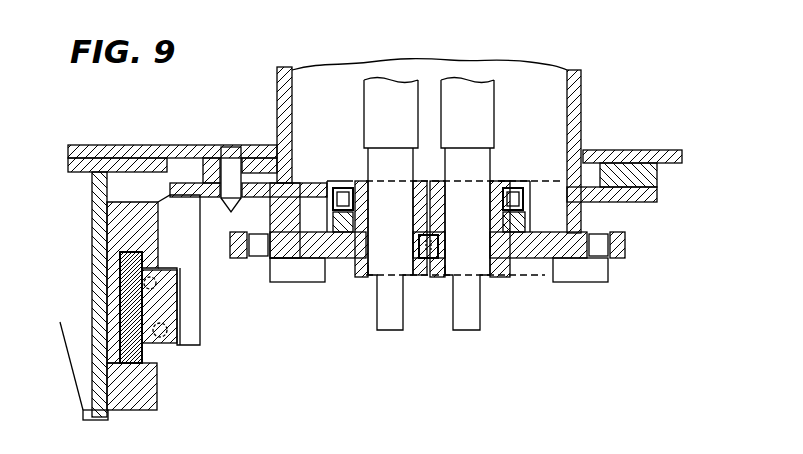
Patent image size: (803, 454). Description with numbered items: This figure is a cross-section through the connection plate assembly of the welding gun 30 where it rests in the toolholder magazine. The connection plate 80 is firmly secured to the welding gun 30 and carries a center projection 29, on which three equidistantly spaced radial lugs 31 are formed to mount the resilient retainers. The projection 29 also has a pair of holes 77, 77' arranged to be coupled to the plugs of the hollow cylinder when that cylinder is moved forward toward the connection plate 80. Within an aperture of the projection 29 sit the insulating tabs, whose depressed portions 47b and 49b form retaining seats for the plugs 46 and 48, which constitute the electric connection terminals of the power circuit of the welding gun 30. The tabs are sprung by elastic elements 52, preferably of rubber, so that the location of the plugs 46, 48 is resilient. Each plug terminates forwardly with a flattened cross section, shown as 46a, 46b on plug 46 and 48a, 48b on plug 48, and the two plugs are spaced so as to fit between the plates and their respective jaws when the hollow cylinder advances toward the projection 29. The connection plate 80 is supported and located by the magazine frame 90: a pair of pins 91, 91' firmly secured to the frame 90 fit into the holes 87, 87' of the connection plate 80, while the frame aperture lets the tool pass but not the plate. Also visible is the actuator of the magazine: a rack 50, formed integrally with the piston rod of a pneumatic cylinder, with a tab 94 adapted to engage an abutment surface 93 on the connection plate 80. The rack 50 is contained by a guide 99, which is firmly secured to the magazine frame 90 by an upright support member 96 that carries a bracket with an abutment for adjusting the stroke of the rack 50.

The center projection 29 is at (330, 240).
The welding gun 30 is at (573, 100).
The radial lugs 31 is at (285, 283).
The plug 46 is at (491, 208).
The flattened cross section 46a is at (481, 313).
The flattened cross section 46b is at (452, 313).
The tab portion 47b is at (503, 278).
The plug 48 is at (382, 228).
The flattened cross section 48a is at (407, 313).
The flattened cross section 48b is at (374, 313).
The tab portion 49b is at (360, 268).
The rack 50 is at (160, 343).
The elastic elements 52 is at (340, 186).
The hole 77 is at (441, 282).
The hole 77' is at (615, 282).
The connection plate 80 is at (643, 195).
The hole 87 is at (248, 239).
The hole 87' is at (248, 239).
The frame 90 is at (177, 146).
The pin 91 is at (247, 142).
The pin 91' is at (247, 142).
The abutment surface 93 is at (193, 158).
The tab 94 is at (200, 200).
The upright support member 96 is at (93, 183).
The guide 99 is at (150, 403).